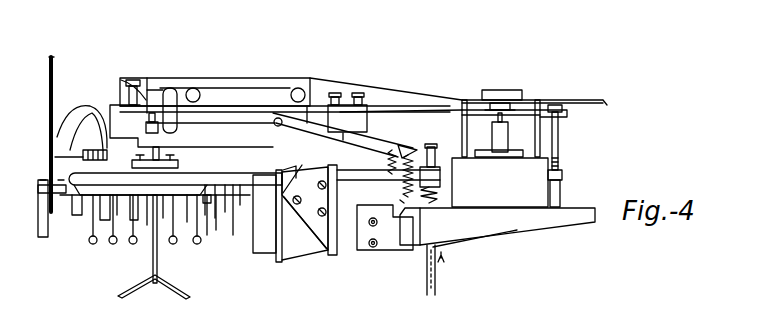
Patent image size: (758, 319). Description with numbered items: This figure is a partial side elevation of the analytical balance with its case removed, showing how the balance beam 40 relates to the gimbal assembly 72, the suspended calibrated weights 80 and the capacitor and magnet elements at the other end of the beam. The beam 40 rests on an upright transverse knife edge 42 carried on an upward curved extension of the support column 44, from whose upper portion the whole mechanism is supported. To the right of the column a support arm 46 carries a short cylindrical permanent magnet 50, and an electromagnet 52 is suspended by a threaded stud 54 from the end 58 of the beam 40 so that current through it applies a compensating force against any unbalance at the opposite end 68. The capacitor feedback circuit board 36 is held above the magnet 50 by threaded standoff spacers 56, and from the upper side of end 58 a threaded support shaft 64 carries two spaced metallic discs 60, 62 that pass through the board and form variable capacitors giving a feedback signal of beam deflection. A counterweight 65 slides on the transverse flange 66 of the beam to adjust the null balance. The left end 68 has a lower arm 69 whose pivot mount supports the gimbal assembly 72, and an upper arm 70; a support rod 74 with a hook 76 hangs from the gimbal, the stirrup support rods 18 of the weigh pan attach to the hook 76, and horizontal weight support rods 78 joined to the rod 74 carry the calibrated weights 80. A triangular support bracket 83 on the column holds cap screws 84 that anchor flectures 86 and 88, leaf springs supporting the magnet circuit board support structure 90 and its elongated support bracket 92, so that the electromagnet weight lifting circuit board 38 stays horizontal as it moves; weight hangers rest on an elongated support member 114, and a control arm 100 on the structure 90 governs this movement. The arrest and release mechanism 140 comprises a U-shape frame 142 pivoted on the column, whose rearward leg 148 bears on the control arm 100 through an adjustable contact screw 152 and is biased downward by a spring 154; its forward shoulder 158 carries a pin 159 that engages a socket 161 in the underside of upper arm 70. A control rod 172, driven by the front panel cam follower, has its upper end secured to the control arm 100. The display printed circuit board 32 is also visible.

The stirrup type support rods 18 is at (128, 293).
The display printed circuit board 32 is at (46, 86).
The capacitor feedback restoring circuit board 36 is at (605, 103).
The electromagnet weight lifting circuit board 38 is at (53, 134).
The balance beam 40 is at (195, 80).
The knife edge 42 is at (280, 110).
The support column 44 is at (322, 295).
The support arm 46 is at (518, 233).
The permanent magnet 50 is at (532, 197).
The electromagnet 52 is at (568, 175).
The threaded stud 54 is at (490, 130).
The threaded standoff spacers 56 is at (460, 130).
The end of the balance beam 58 is at (523, 110).
The metallic disc 60 is at (488, 98).
The metallic disc 62 is at (498, 100).
The threaded support shaft 64 is at (503, 107).
The counterweight 65 is at (333, 103).
The transverse flange 66 is at (282, 112).
The left end of the beam 68 is at (143, 78).
The lower arm 69 is at (180, 62).
The upper beam arm 70 is at (133, 90).
The gimbal assembly 72 is at (176, 163).
The support rod 74 is at (147, 258).
The hook 76 is at (195, 290).
The weight support rods 78 is at (68, 205).
The calibrated weights 80 is at (92, 227).
The triangular support bracket 83 is at (327, 225).
The cap screws 84 is at (332, 166).
The flecture 86 is at (283, 170).
The flecture 88 is at (282, 255).
The magnet printed circuit board support structure 90 is at (259, 262).
The support bracket 92 is at (40, 191).
The control arm 100 is at (395, 155).
The support member 114 is at (55, 158).
The arrest and release mechanism 140 is at (229, 108).
The U-shape frame 142 is at (307, 107).
The rearwardly extending leg 148 is at (343, 133).
The adjustable contact screw 152 is at (388, 150).
The spring 154 is at (442, 265).
The shoulder 158 is at (130, 100).
The pin 159 is at (52, 58).
The socket 161 is at (147, 78).
The control rod 172 is at (435, 247).